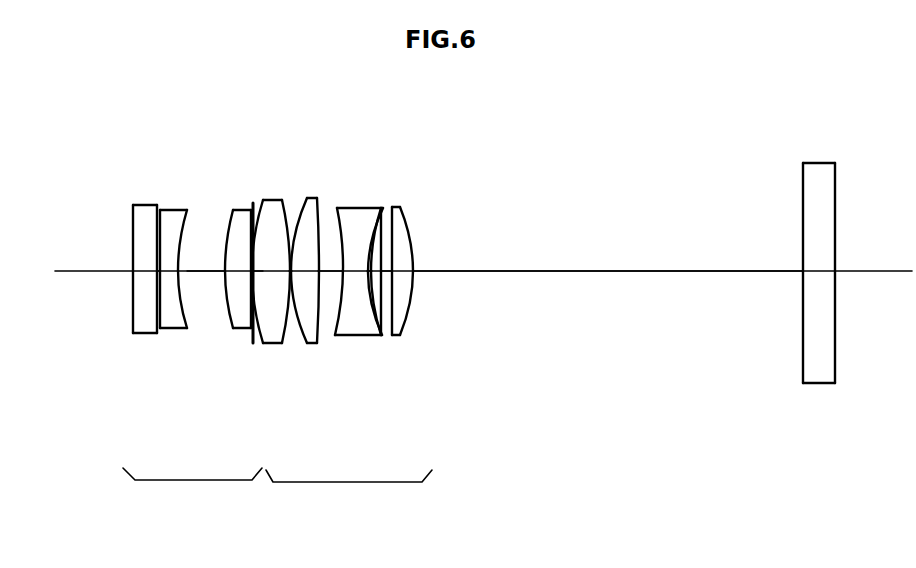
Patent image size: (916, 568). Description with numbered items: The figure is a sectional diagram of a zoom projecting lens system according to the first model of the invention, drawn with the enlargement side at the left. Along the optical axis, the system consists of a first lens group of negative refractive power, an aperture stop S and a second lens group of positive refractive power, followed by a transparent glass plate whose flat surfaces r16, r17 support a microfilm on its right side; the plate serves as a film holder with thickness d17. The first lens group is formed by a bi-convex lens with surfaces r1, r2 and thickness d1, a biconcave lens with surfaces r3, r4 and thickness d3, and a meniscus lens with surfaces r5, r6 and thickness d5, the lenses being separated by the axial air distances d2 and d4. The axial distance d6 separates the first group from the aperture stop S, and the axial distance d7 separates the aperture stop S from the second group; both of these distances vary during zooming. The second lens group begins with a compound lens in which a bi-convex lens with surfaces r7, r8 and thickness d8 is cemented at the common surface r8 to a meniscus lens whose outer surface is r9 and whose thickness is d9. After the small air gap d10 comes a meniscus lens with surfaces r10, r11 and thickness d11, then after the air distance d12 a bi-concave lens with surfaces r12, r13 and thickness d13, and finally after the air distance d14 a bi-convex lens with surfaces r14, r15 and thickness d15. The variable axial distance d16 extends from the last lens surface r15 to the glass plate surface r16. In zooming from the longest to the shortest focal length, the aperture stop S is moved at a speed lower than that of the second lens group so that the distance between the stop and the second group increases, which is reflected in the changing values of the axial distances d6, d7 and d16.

The axial distance d1 is at (97, 270).
The axial distance d2 is at (158, 268).
The axial distance d3 is at (154, 270).
The axial distance d4 is at (200, 268).
The axial distance d5 is at (215, 270).
The axial distance d6 is at (255, 268).
The axial distance d7 is at (280, 271).
The axial distance d8 is at (288, 255).
The axial distance d9 is at (328, 271).
The axial distance d10 is at (308, 230).
The axial distance d11 is at (372, 271).
The axial distance d12 is at (350, 240).
The axial distance d13 is at (428, 271).
The axial distance d14 is at (398, 262).
The axial distance d15 is at (476, 250).
The axial distance d16 is at (572, 271).
The axial distance d17 is at (833, 300).
The radius of curvature r1 is at (133, 318).
The radius of curvature r2 is at (150, 322).
The radius of curvature r3 is at (176, 322).
The radius of curvature r4 is at (190, 327).
The radius of curvature r5 is at (231, 328).
The radius of curvature r6 is at (250, 328).
The radius of curvature r7 is at (268, 343).
The radius of curvature r8 is at (278, 343).
The radius of curvature r9 is at (292, 343).
The radius of curvature r10 is at (315, 343).
The radius of curvature r11 is at (325, 343).
The radius of curvature r12 is at (368, 335).
The radius of curvature r13 is at (380, 337).
The radius of curvature r14 is at (395, 330).
The radius of curvature r15 is at (408, 305).
The radius of curvature r16 is at (805, 343).
The radius of curvature r17 is at (836, 345).
The aperture stop S is at (253, 200).